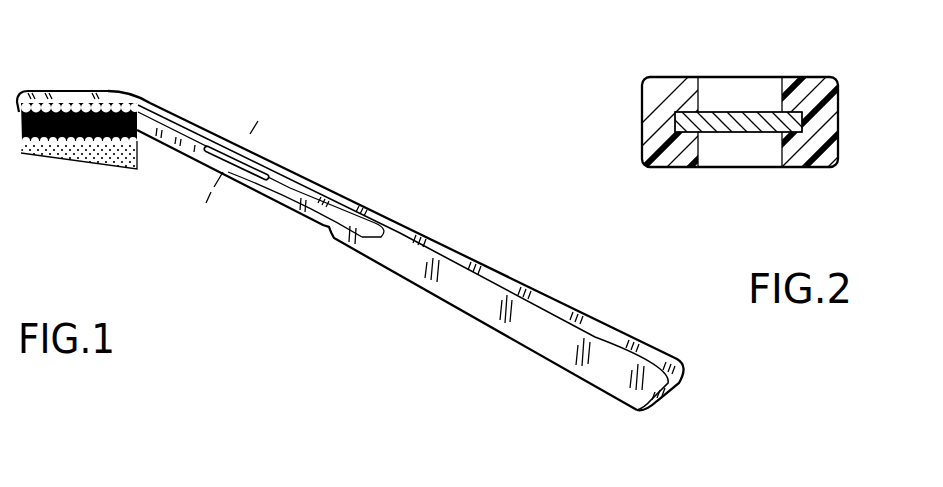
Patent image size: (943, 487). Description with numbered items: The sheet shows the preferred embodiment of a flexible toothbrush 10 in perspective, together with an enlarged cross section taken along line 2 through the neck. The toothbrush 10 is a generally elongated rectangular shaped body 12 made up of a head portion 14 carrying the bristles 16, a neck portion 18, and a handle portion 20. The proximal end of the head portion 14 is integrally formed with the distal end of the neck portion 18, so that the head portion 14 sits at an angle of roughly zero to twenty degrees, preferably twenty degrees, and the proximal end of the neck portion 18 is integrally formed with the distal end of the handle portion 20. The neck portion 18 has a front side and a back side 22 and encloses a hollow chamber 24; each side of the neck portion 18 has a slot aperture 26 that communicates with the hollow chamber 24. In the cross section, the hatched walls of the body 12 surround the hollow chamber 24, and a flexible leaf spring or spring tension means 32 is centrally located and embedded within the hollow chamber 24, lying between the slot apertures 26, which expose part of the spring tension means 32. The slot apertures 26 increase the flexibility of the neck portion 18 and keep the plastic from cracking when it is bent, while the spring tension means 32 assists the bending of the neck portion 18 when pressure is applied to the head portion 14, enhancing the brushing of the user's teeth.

In FIG. 1, the line 2— 2 is at (263, 113).
In FIG. 1, the flexible toothbrush 10 is at (437, 115).
In FIG. 1, the elongated rectangular shaped body 12 is at (401, 219).
In FIG. 1, the head portion 14 is at (65, 92).
In FIG. 1, the bristles 16 is at (80, 152).
In FIG. 1, the neck portion 18 is at (278, 166).
In FIG. 2, the neck portion 18 is at (645, 160).
In FIG. 1, the handle portion 20 is at (450, 297).
In FIG. 2, the handle portion 20 is at (812, 163).
In FIG. 2, the back side 22 is at (813, 75).
In FIG. 2, the hollow chamber 24 is at (758, 157).
In FIG. 2, the slot aperture 26 is at (780, 92).
In FIG. 2, the spring tension means 32 is at (748, 113).